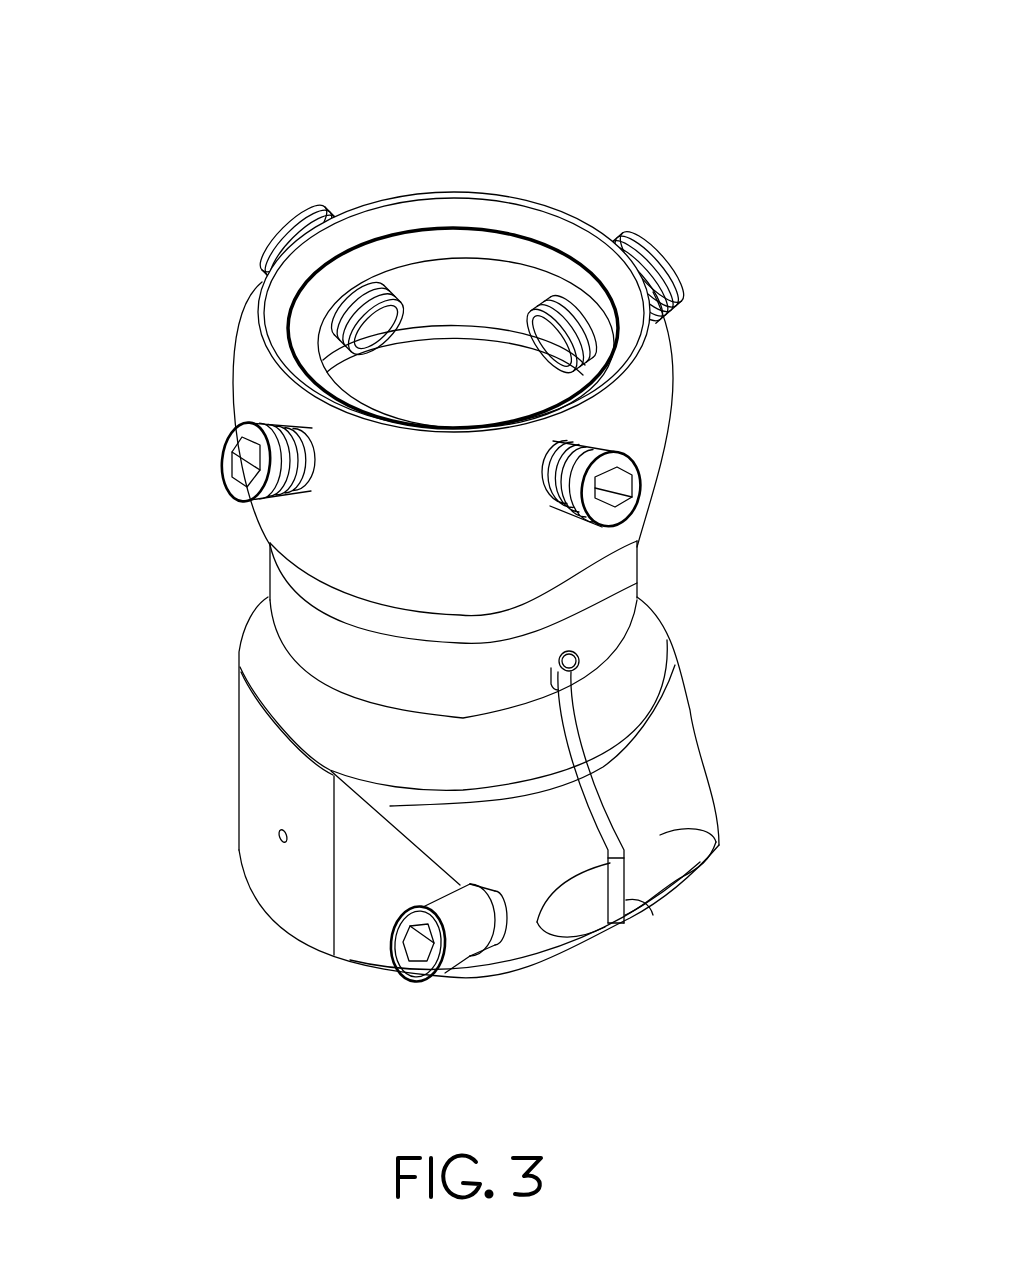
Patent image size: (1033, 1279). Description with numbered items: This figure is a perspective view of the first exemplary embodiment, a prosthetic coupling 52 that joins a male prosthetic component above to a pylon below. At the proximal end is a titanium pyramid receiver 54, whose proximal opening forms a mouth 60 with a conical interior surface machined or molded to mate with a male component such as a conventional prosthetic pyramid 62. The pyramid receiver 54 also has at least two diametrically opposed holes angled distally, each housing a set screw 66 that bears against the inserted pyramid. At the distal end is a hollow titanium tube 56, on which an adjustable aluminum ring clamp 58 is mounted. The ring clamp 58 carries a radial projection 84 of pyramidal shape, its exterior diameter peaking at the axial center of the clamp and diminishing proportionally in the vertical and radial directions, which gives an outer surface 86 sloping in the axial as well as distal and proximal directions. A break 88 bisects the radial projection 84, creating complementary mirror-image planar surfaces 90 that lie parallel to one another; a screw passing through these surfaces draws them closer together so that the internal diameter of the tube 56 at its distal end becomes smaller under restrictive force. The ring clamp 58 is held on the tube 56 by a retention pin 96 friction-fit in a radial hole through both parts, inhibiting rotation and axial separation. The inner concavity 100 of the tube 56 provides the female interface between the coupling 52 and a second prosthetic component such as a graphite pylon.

The prosthetic coupling 52 is at (688, 116).
The pyramid receiver 54 is at (209, 388).
The tube 56 is at (267, 582).
The ring clamp 58 is at (277, 910).
The mouth 60 is at (458, 272).
The prosthetic pyramid 62 is at (407, 207).
The set screw 66 is at (668, 267).
The radial projection 84 is at (724, 757).
The outer surface 86 is at (520, 860).
The break 88 is at (601, 800).
The planar surfaces 90 is at (650, 916).
The retention pin 96 is at (278, 836).
The inner concavity 100 is at (524, 994).